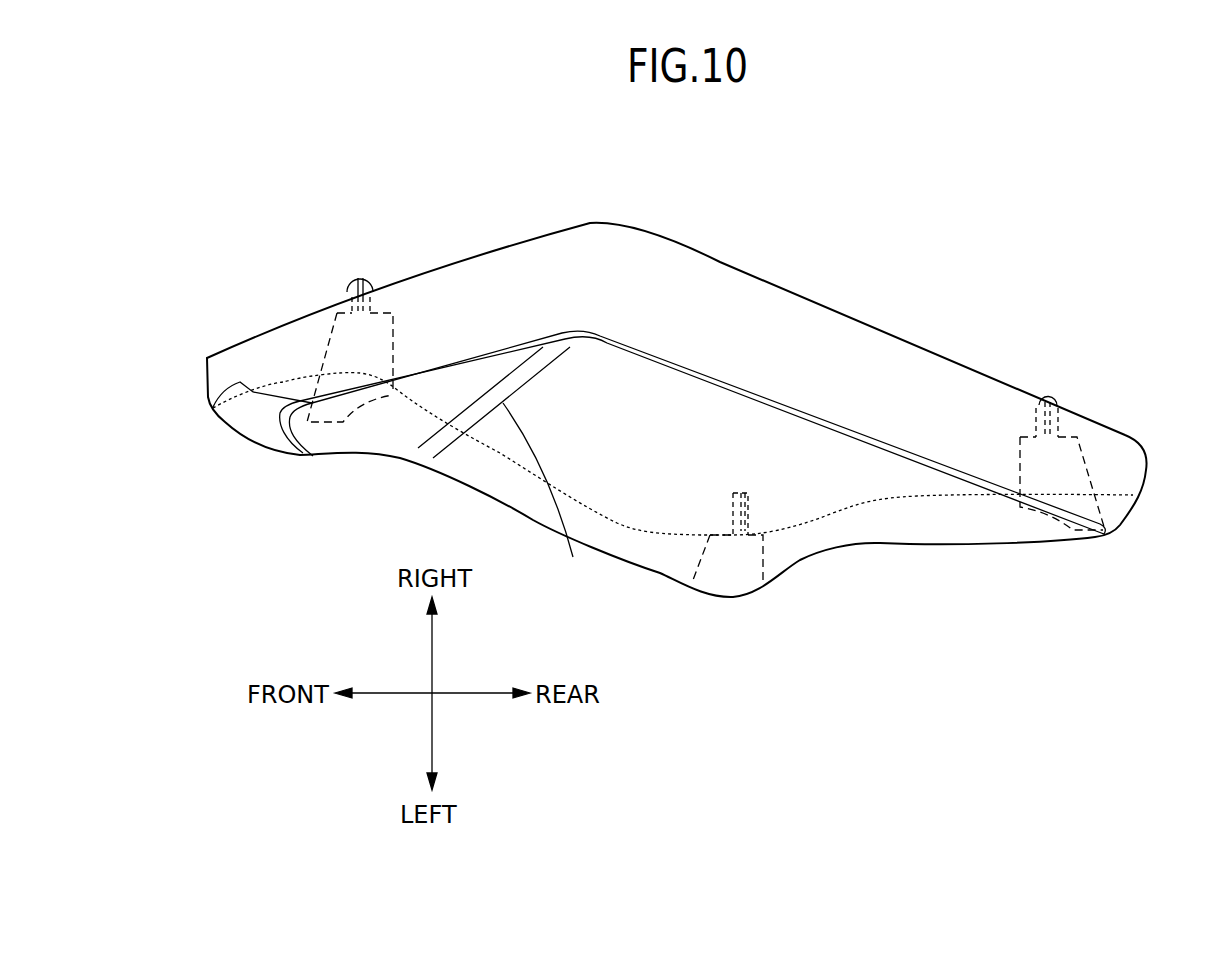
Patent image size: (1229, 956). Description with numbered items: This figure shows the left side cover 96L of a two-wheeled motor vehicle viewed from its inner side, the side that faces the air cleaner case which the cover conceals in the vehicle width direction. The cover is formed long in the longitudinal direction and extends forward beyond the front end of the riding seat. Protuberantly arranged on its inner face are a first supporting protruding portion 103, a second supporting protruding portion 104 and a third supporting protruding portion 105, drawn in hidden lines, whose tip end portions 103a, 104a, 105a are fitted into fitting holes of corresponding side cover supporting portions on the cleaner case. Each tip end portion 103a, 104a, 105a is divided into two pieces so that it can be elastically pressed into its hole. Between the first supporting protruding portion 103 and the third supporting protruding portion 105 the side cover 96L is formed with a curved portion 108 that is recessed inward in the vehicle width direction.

The left side cover 96L is at (768, 298).
The first supporting protruding portion 103 is at (1090, 473).
The tip end portion of first supporting protruding portion 103a is at (1050, 400).
The second supporting protruding portion 104 is at (767, 557).
The tip end portion of second supporting protruding portion 104a is at (730, 505).
The third supporting protruding portion 105 is at (398, 345).
The tip end portion of third supporting protruding portion 105a is at (347, 292).
The curved portion 108 is at (548, 497).